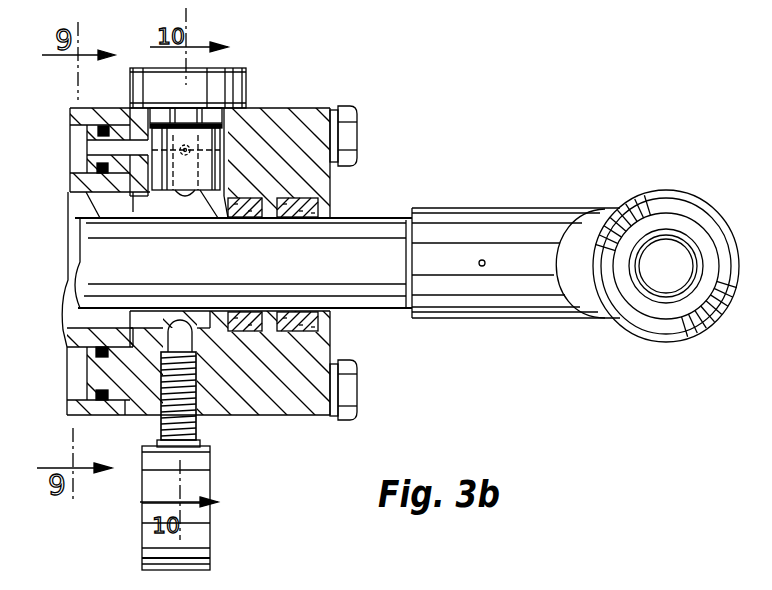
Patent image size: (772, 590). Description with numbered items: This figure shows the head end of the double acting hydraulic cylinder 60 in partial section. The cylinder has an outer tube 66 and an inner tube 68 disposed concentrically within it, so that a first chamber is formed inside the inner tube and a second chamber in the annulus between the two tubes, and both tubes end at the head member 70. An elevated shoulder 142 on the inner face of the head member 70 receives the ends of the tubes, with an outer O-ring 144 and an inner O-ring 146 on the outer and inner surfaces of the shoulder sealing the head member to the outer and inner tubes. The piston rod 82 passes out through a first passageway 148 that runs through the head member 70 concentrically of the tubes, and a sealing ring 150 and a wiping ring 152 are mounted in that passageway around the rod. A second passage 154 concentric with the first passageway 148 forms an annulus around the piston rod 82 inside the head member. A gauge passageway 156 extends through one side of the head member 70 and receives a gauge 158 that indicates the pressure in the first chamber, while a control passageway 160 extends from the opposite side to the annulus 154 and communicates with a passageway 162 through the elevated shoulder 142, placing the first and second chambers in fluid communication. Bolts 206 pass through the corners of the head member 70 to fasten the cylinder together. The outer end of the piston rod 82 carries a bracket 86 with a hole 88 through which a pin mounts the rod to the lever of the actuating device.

The double acting hydraulic cylinder 60 is at (291, 98).
The bolts 206 is at (358, 125).
The piston rod 82 is at (388, 216).
The bracket 86 is at (497, 208).
The hole 88 is at (638, 278).
The outer O-ring 144 is at (95, 108).
The passageway 162 is at (92, 146).
The elevated shoulder 142 is at (97, 170).
The inner O-ring 146 is at (85, 192).
The second passage 154 is at (150, 206).
The control passageway 160 is at (185, 197).
The sealing ring 150 is at (248, 218).
The wiping ring 152 is at (300, 198).
The first passageway 148 is at (320, 218).
The gauge passageway 156 is at (177, 345).
The inner tube 68 is at (66, 348).
The outer tube 66 is at (100, 402).
The head member 70 is at (252, 417).
The gauge 158 is at (148, 541).